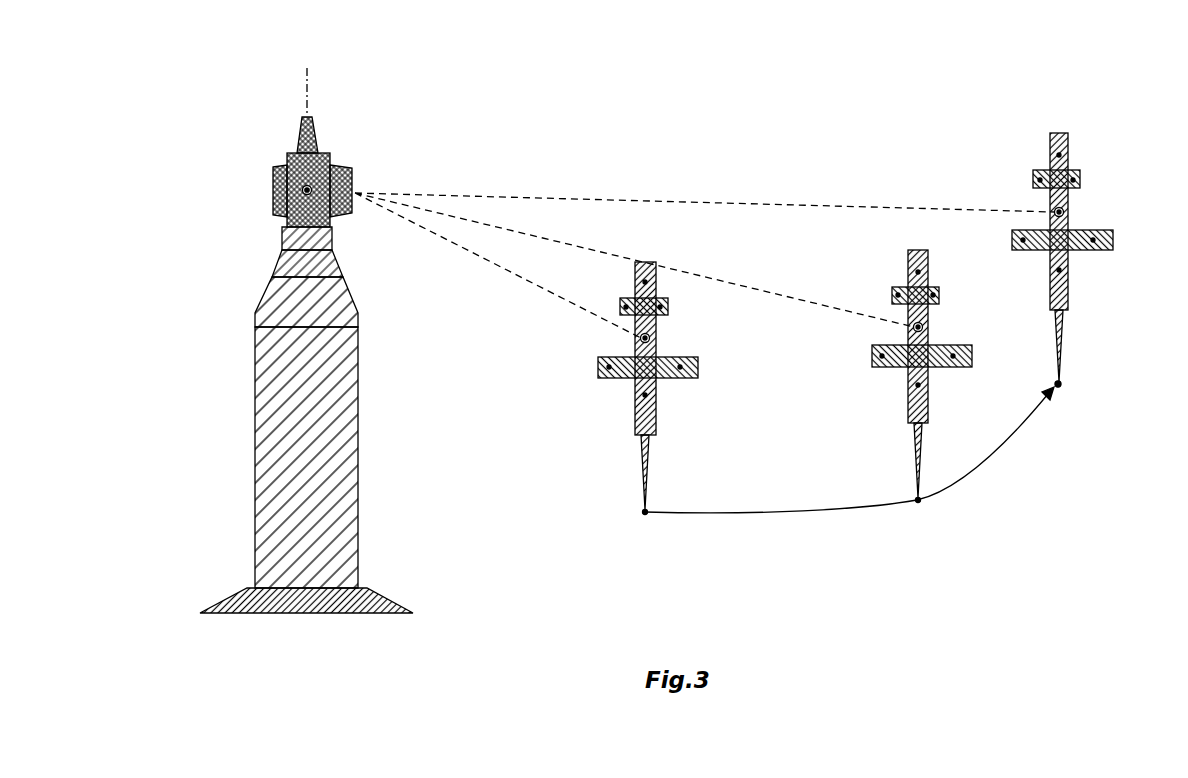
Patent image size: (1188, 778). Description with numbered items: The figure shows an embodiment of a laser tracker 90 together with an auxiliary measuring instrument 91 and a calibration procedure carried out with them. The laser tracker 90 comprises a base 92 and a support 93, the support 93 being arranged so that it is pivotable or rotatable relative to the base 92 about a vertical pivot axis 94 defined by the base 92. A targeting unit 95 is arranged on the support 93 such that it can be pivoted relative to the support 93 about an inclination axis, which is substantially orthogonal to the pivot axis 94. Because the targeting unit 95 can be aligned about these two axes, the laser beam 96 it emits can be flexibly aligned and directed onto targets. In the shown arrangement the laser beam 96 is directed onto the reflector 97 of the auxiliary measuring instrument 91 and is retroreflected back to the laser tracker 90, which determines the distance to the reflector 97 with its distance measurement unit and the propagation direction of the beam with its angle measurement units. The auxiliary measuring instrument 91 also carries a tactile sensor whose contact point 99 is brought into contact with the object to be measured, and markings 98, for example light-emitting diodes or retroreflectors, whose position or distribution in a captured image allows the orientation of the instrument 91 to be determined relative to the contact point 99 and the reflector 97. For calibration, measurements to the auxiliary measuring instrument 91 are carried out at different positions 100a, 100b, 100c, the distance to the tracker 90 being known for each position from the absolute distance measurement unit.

The laser tracker 90 is at (284, 96).
The auxiliary measuring instrument 91 is at (1046, 108).
The base 92 is at (290, 240).
The support 93 is at (313, 172).
The pivot axis 94 is at (307, 90).
The targeting unit 95 is at (280, 173).
The laser beam 96 is at (617, 200).
The reflector 97 is at (1062, 212).
The markings 98 is at (1067, 133).
The contact point 99 is at (1060, 380).
The position 100a is at (642, 528).
The position 100b is at (914, 522).
The position 100c is at (1062, 405).